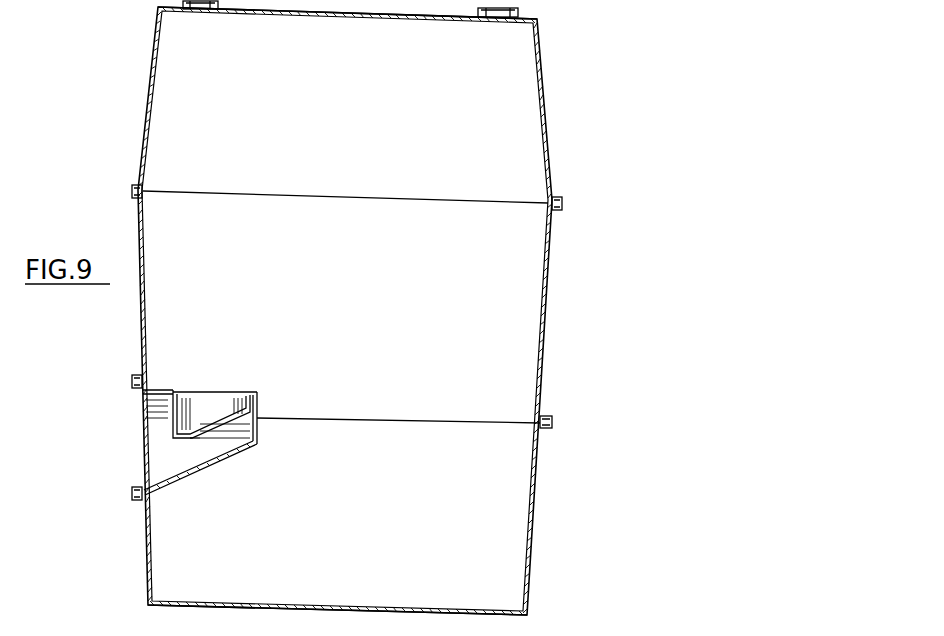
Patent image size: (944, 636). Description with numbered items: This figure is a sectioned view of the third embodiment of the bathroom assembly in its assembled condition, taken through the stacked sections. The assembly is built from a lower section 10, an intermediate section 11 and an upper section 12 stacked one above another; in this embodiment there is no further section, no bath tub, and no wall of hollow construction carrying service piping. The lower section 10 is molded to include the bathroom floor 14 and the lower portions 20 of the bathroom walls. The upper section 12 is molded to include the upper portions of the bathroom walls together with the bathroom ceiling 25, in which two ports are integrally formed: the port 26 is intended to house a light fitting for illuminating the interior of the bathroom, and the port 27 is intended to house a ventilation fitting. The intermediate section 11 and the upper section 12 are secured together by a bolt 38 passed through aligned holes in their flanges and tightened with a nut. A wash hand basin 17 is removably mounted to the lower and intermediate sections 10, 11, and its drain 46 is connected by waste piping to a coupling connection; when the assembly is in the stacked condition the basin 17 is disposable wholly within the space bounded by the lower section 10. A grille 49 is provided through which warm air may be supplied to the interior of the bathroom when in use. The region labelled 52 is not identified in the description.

The lower section 10 is at (123, 192).
The intermediate section 11 is at (345, 215).
The upper section 12 is at (360, 107).
The bathroom floor 14 is at (345, 605).
The wash hand basin 17 is at (222, 398).
The lower portions of the bathroom walls 20 is at (143, 547).
The bathroom ceiling 25 is at (352, 12).
The port 26 is at (220, 8).
The port 27 is at (497, 17).
The bolt 38 is at (550, 429).
The drain 46 is at (182, 437).
The grille 49 is at (243, 450).
The lower middle compartment 52 is at (398, 393).